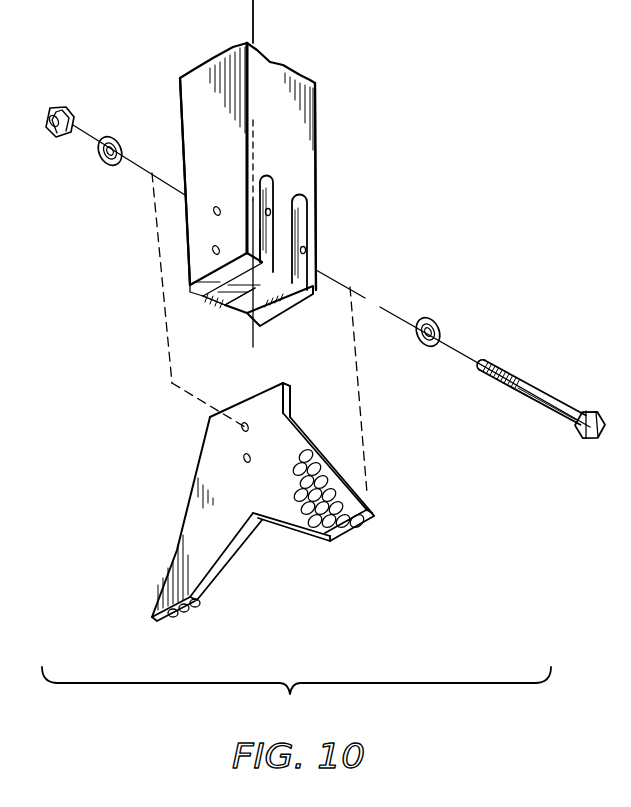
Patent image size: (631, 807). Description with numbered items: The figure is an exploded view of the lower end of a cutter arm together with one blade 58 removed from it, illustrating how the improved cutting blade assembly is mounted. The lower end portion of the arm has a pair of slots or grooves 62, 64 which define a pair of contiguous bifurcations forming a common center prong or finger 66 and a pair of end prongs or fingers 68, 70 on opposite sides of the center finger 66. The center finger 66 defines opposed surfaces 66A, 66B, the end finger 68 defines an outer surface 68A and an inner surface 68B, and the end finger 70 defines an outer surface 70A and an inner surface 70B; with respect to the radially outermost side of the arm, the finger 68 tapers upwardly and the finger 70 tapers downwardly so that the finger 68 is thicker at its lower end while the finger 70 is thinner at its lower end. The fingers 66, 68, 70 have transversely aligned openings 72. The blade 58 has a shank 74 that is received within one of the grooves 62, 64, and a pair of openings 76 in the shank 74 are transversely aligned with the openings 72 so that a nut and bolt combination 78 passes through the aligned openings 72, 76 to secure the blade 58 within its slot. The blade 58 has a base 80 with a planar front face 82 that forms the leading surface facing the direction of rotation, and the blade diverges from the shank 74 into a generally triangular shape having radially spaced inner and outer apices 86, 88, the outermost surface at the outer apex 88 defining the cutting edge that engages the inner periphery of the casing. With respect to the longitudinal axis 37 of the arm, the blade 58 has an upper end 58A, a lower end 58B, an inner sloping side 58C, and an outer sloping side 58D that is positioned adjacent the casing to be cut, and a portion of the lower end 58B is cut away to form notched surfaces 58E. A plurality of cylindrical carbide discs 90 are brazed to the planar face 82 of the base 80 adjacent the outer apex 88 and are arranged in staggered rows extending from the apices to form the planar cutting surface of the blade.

The longitudinal axis 37 is at (253, 13).
The blade 58 is at (260, 491).
The upper end 58A is at (254, 393).
The lower end 58B is at (352, 531).
The inner sloping side 58C is at (190, 507).
The outer sloping side 58D is at (323, 447).
The notched surfaces 58E is at (245, 531).
The groove 62 is at (265, 238).
The groove 64 is at (286, 250).
The center finger 66 is at (237, 305).
The opposed surface of center finger 66A is at (274, 176).
The opposed surface of center finger 66B is at (303, 197).
The end finger 68 is at (207, 194).
The outer surface of end finger 68A is at (185, 243).
The inner surface of end finger 68B is at (255, 190).
The end finger 70 is at (304, 220).
The outer surface of end finger 70A is at (317, 232).
The inner surface of end finger 70B is at (307, 250).
The openings 72 is at (215, 206).
The shank 74 is at (292, 388).
The openings 76 is at (249, 428).
The nut and bolt combination 78 is at (545, 394).
The base 80 is at (172, 580).
The planar front face 82 is at (187, 553).
The inner apex 86 is at (152, 617).
The outer apex 88 is at (374, 517).
The carbide discs 90 is at (297, 480).